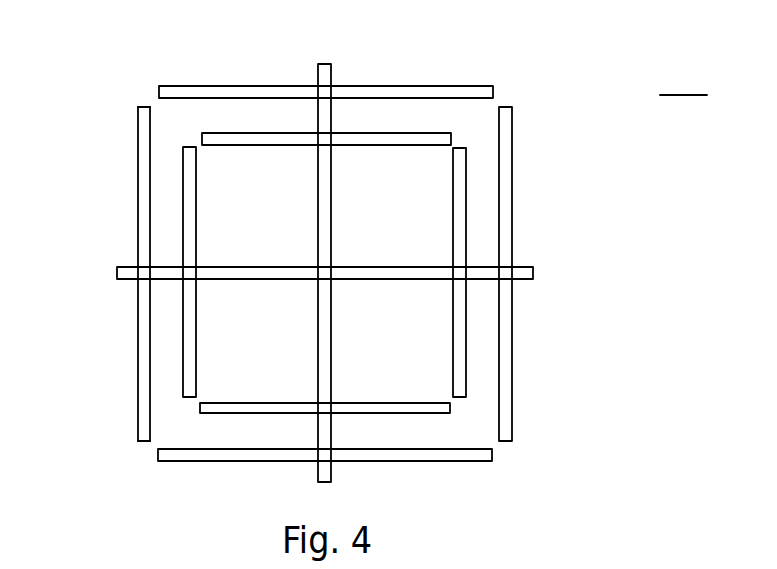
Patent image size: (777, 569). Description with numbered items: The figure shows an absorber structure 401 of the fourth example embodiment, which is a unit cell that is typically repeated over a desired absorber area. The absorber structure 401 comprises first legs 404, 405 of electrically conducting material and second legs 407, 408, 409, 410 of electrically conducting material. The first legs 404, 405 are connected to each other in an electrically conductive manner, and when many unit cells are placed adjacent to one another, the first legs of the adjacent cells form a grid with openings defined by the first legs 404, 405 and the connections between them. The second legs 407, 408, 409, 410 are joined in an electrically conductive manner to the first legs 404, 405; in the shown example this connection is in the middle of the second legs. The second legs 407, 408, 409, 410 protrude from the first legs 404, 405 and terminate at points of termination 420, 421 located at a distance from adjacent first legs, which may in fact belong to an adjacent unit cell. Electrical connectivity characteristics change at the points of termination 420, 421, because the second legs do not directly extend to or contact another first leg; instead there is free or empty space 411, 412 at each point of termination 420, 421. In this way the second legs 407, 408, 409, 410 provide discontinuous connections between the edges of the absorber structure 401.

The absorber structure 401 is at (683, 81).
The first leg 404 is at (534, 273).
The first leg 405 is at (332, 77).
The second leg 407 is at (195, 87).
The second leg 408 is at (268, 133).
The second leg 409 is at (138, 204).
The second leg 410 is at (183, 325).
The free space 411 is at (142, 92).
The free space 412 is at (148, 451).
The point of termination 420 is at (138, 107).
The point of termination 421 is at (158, 457).